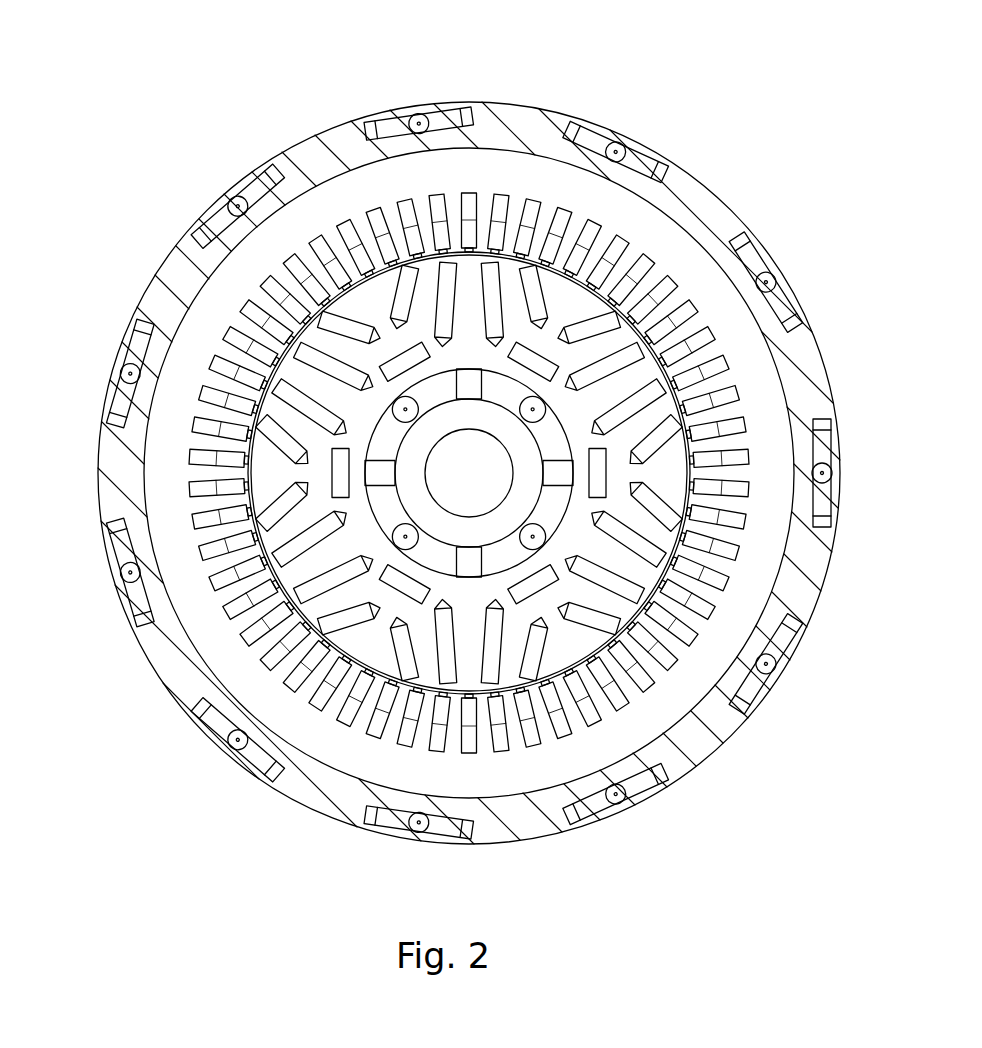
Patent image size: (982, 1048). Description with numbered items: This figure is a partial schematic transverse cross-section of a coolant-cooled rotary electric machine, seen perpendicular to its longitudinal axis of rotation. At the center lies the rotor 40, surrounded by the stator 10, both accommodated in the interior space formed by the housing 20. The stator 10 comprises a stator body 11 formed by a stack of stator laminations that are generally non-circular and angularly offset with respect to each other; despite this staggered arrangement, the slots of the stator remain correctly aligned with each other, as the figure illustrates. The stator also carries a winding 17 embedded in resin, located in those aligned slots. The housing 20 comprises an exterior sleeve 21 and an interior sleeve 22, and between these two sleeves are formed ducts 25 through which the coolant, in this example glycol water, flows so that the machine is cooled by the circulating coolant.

The stator 10 is at (707, 668).
The stator body 11 is at (249, 293).
The winding 17 is at (742, 393).
The housing 20 is at (181, 262).
The exterior sleeve 21 is at (375, 105).
The interior sleeve 22 is at (458, 128).
The ducts 25 is at (265, 178).
The rotor 40 is at (604, 412).